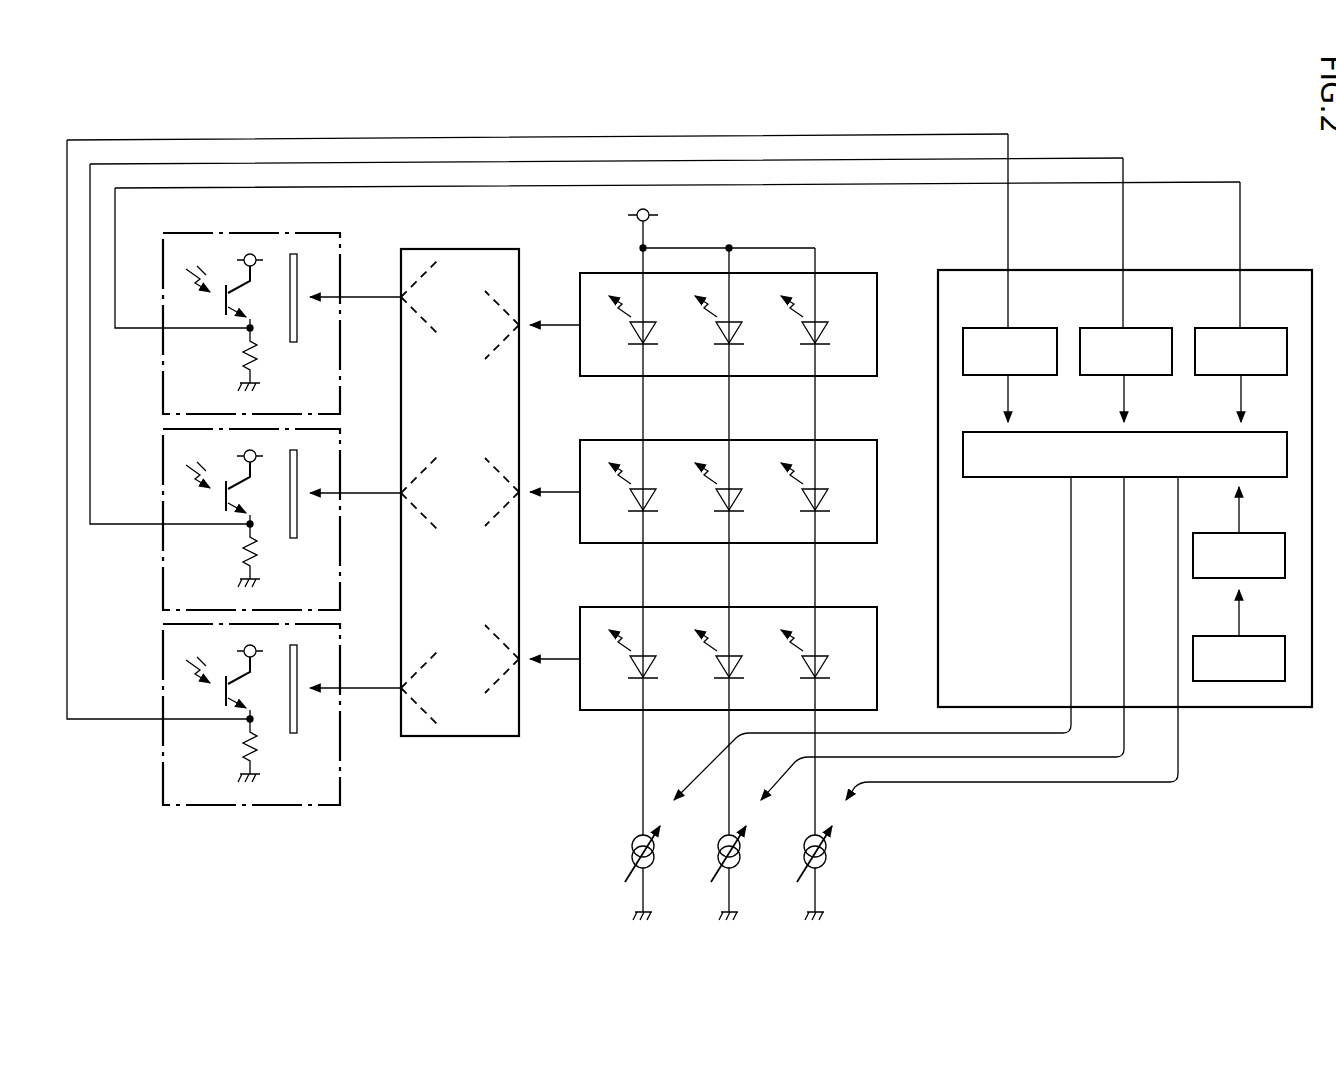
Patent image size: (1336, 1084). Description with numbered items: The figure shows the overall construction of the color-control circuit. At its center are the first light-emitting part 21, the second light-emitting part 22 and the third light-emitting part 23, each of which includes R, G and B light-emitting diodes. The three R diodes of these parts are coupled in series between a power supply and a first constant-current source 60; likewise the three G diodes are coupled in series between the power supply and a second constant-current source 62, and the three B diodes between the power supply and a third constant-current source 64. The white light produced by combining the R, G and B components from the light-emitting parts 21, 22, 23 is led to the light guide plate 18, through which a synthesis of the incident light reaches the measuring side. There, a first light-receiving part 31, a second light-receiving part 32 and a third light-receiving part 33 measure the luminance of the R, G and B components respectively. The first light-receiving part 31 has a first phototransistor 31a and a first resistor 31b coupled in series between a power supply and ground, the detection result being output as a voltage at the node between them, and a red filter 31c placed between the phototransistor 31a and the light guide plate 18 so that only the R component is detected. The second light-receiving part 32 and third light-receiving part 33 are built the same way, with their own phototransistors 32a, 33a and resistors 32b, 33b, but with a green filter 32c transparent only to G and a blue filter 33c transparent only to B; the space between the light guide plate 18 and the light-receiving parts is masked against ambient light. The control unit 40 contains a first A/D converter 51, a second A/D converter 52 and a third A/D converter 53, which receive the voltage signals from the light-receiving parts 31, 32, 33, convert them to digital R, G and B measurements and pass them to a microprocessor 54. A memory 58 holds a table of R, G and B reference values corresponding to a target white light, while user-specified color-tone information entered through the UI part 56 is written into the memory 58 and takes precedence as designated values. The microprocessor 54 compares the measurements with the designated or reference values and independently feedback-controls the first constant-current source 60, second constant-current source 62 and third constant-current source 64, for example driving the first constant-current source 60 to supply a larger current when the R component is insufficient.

The light guide plate 18 is at (462, 248).
The first light-emitting part 21 is at (877, 659).
The second light-emitting part 22 is at (877, 492).
The third light-emitting part 23 is at (877, 325).
The first light-receiving part 31 is at (163, 757).
The first phototransistor 31a is at (228, 673).
The first resistor 31b is at (240, 746).
The red (R) filter 31c is at (293, 734).
The second light-receiving part 32 is at (163, 562).
The phototransistor of second light-receiving part 32a is at (228, 478).
The resistor of second light-receiving part 32b is at (240, 551).
The green (G) filter 32c is at (293, 539).
The third light-receiving part 33 is at (163, 366).
The phototransistor of third light-receiving part 33a is at (228, 282).
The resistor of third light-receiving part 33b is at (240, 355).
The blue (B) filter 33c is at (293, 343).
The control unit 40 is at (1275, 269).
The first A/D converter 51 is at (1032, 327).
The second A/D converter 52 is at (1148, 327).
The third A/D converter 53 is at (1265, 327).
The microprocessor 54 is at (1265, 430).
The UI part 56 is at (1263, 635).
The memory 58 is at (1263, 532).
The first constant-current source 60 is at (627, 872).
The second constant-current source 62 is at (713, 872).
The third constant-current source 64 is at (799, 872).